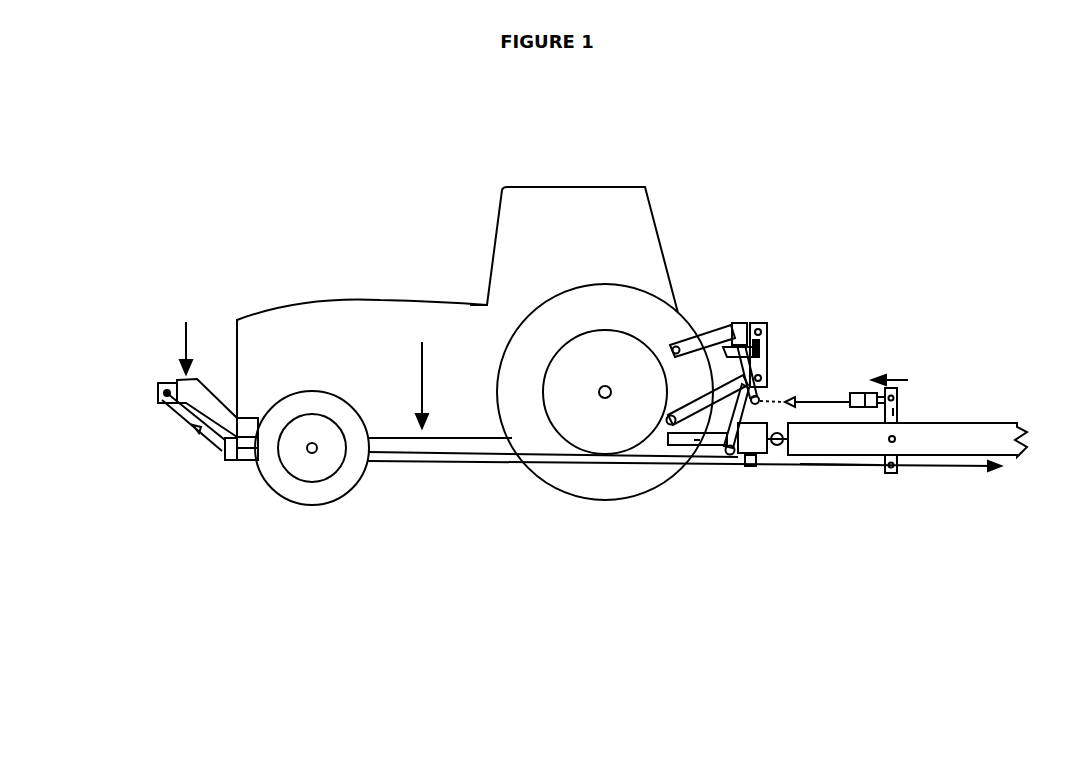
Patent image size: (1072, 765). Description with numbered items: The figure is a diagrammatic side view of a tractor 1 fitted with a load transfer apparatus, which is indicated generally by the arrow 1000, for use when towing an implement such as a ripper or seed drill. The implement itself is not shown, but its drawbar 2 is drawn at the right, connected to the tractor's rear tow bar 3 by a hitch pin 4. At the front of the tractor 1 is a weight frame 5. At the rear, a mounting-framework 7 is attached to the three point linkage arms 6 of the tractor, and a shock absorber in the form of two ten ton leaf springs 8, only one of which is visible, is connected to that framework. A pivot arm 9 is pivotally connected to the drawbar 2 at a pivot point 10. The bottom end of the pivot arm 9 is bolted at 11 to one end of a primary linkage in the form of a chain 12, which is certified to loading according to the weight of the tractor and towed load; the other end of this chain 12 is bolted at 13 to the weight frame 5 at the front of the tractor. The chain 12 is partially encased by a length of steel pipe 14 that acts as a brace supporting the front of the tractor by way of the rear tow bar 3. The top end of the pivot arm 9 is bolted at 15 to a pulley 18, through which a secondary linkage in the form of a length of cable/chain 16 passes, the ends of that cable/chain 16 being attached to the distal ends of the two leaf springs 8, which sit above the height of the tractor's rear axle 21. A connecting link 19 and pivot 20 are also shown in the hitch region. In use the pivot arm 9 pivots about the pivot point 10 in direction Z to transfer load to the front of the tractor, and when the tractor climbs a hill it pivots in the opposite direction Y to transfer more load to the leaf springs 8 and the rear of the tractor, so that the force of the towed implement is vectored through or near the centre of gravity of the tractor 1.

The tractor 1 is at (614, 152).
The drawbar 2 is at (988, 442).
The tow bar 3 is at (745, 450).
The hitch pin 4 is at (787, 435).
The weight frame 5 is at (197, 392).
The three point linkage arms 6 is at (710, 340).
The mounting-framework 7 is at (740, 325).
The leaf springs 8 is at (733, 322).
The pivot arm 9 is at (895, 413).
The pivot point 10 is at (895, 442).
The bolt connection 11 is at (888, 473).
The chain 12 is at (840, 465).
The bolt connection 13 is at (163, 397).
The steel pipe 14 is at (402, 463).
The bolt connection 15 is at (895, 388).
The cable/chain 16 is at (840, 394).
The pulley 18 is at (868, 394).
The connecting link 19 is at (734, 419).
The pivot point 20 is at (758, 398).
The rear axle 21 is at (605, 398).
The load transfer apparatus 1000 is at (468, 578).